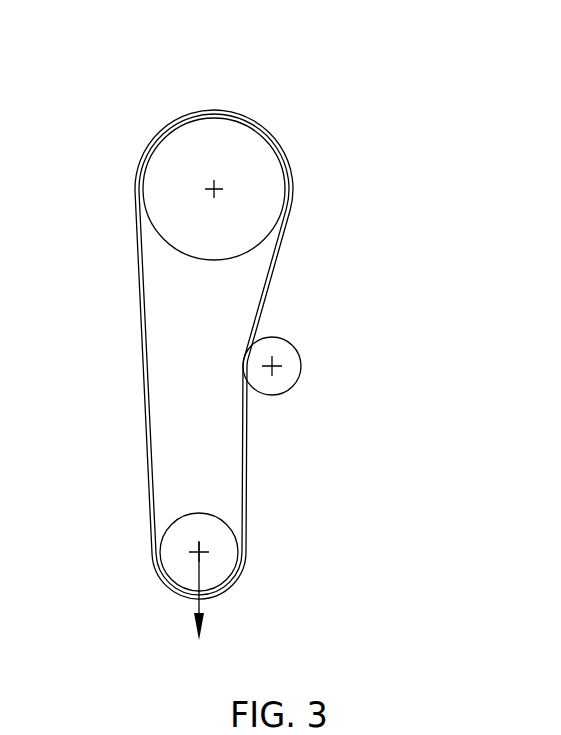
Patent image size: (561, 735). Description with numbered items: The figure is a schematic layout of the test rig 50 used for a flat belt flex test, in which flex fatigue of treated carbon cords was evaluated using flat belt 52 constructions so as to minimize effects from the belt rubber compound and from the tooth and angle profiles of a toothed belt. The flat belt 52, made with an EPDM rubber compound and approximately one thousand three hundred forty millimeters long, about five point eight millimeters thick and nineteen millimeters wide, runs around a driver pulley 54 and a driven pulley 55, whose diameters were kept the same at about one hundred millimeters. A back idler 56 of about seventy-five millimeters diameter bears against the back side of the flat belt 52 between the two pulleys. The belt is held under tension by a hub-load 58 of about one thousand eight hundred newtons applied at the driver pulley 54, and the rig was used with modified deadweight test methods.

The test rig 50 is at (282, 78).
The flat belt 52 is at (146, 300).
The driver pulley 54 is at (223, 540).
The driven pulley 55 is at (253, 167).
The back idler 56 is at (288, 351).
The hub-load 58 is at (203, 613).